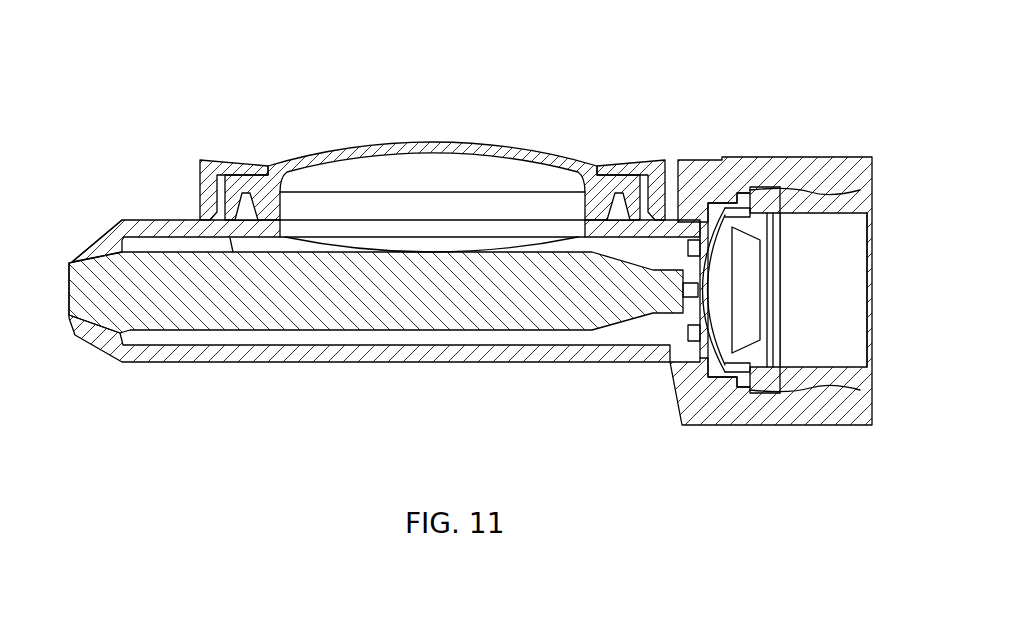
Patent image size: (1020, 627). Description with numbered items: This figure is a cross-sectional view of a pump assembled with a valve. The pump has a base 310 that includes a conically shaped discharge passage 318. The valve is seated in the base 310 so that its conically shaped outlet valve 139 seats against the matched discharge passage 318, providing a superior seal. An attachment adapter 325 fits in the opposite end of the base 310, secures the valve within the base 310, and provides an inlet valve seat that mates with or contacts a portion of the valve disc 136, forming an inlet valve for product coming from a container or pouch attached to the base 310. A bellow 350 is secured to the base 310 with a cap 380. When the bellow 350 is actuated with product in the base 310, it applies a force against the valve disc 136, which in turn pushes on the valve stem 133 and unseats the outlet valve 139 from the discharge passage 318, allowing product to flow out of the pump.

The base 310 is at (270, 362).
The valve stem 133 is at (400, 293).
The outlet valve 139 is at (77, 293).
The discharge passage 318 is at (72, 245).
The bellow 350 is at (484, 153).
The cap 380 is at (243, 168).
The attachment adapter 325 is at (790, 378).
The valve disc 136 is at (693, 333).